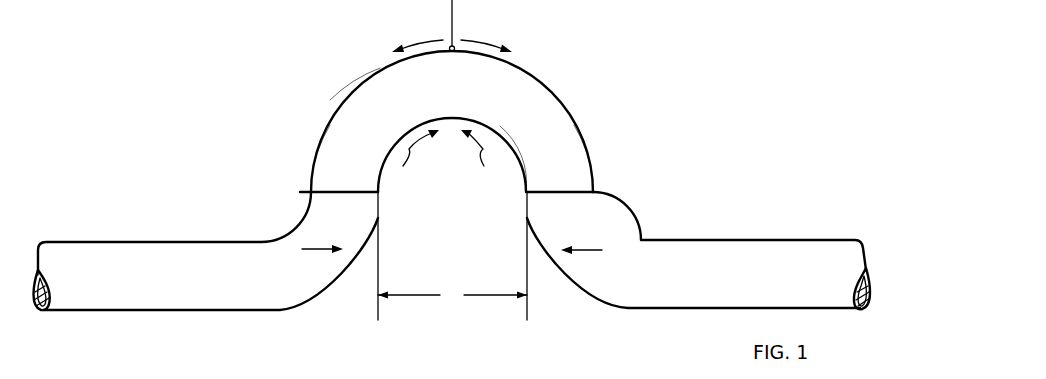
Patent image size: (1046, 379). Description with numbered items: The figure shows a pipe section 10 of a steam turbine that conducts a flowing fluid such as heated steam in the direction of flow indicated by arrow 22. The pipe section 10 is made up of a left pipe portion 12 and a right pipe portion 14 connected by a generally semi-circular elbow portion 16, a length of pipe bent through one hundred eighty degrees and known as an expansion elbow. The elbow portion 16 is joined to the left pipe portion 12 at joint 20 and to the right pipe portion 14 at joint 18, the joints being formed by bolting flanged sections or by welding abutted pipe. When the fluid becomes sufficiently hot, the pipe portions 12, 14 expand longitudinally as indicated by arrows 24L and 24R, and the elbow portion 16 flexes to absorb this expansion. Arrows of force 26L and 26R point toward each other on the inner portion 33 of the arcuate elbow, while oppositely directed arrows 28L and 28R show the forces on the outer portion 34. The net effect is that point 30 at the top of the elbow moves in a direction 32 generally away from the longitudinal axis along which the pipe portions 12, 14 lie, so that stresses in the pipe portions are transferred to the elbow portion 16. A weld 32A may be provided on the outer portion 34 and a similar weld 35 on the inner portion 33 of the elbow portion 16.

The pipe section 10 is at (694, 153).
The left pipe portion 12 is at (122, 242).
The right pipe portion 14 is at (767, 240).
The elbow portion 16 is at (565, 103).
The joint 18 is at (593, 192).
The joint 20 is at (300, 192).
The arrow 22 is at (38, 274).
The arrow 24L is at (316, 252).
The arrow 24R is at (598, 252).
The arrow of force 26L is at (415, 158).
The arrow of force 26R is at (483, 158).
The arrow 28L is at (415, 40).
The arrow 28R is at (486, 40).
The point 30 is at (454, 44).
The direction 32 is at (450, 13).
The weld 32A is at (318, 142).
The inner portion 33 is at (368, 178).
The outer portion 34 is at (346, 99).
The weld 35 is at (526, 180).